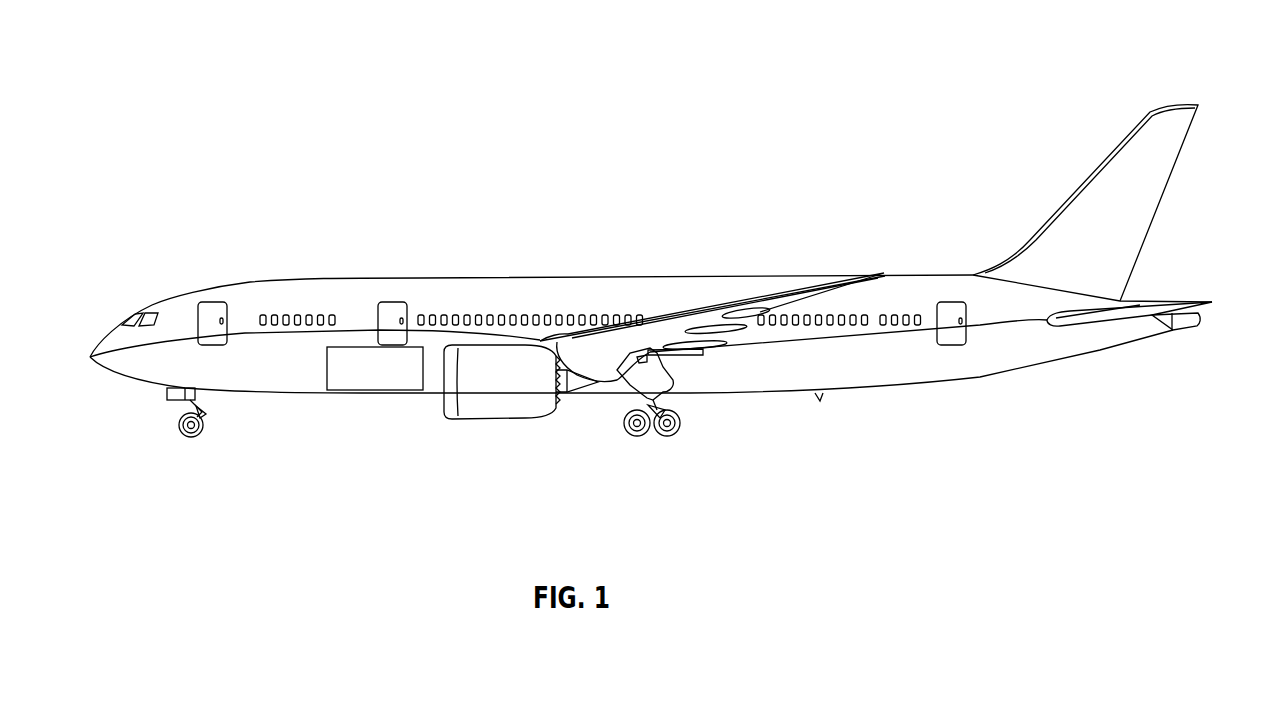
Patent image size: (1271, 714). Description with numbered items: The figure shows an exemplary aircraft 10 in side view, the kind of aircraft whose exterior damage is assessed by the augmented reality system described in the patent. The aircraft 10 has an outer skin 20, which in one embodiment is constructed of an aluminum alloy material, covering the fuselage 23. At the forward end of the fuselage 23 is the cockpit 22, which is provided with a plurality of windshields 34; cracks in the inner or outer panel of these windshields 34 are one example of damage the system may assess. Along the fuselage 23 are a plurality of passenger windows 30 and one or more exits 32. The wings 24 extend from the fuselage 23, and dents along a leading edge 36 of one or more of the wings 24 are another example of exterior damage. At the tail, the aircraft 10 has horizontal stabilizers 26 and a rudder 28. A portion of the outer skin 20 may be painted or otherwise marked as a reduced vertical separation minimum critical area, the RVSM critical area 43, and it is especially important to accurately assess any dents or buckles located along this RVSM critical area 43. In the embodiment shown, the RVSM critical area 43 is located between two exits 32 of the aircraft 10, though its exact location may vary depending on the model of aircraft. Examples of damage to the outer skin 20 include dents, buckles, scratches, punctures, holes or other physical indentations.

The aircraft 10 is at (172, 90).
The outer skin 20 is at (532, 290).
The cockpit 22 is at (172, 308).
The fuselage 23 is at (477, 302).
The wings 24 is at (780, 286).
The horizontal stabilizers 26 is at (1183, 298).
The rudder 28 is at (1155, 160).
The passenger windows 30 is at (307, 306).
The exits 32 is at (215, 300).
The windshields 34 is at (148, 312).
The leading edge 36 is at (712, 300).
The RVSM critical area 43 is at (375, 392).